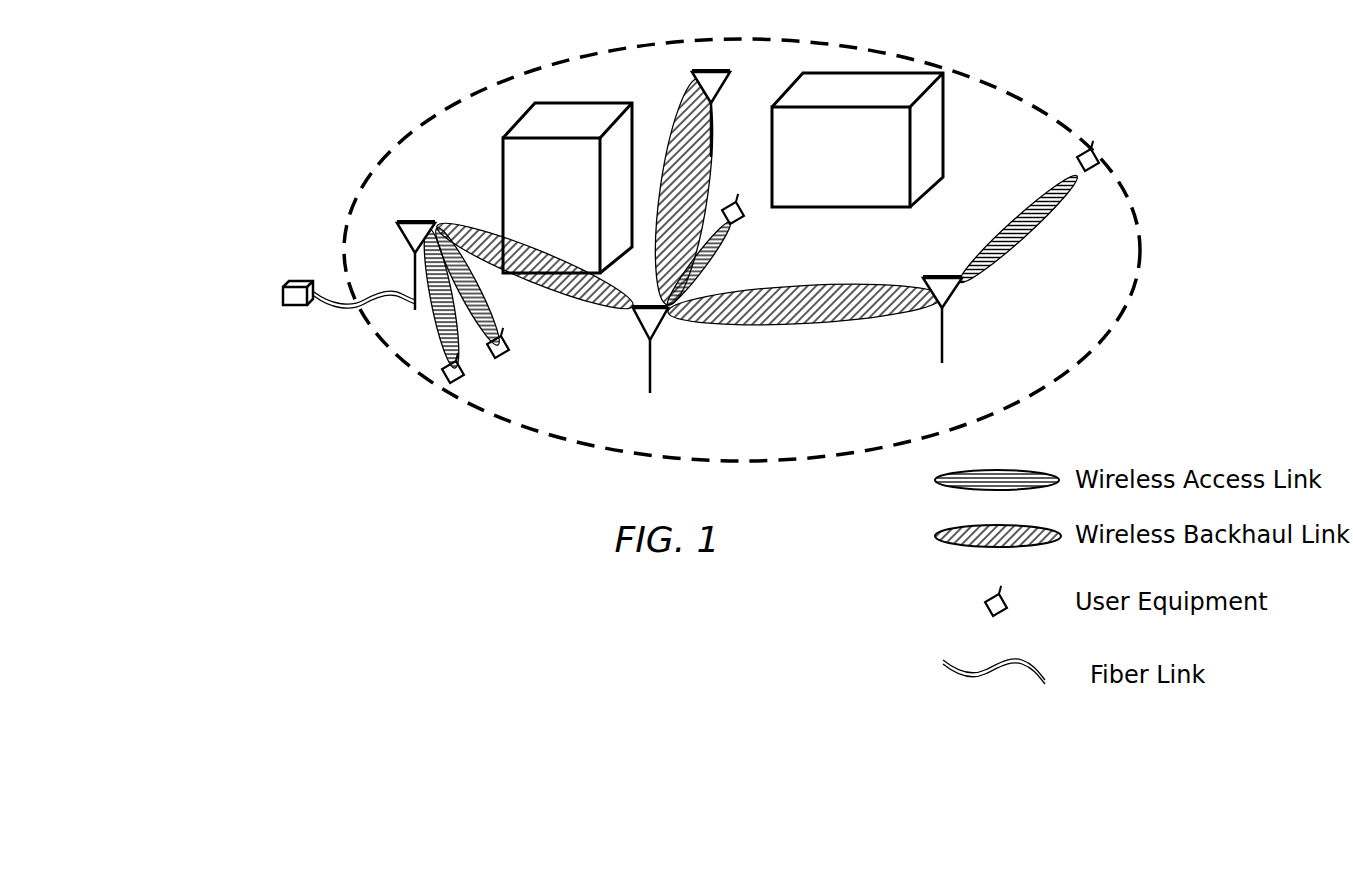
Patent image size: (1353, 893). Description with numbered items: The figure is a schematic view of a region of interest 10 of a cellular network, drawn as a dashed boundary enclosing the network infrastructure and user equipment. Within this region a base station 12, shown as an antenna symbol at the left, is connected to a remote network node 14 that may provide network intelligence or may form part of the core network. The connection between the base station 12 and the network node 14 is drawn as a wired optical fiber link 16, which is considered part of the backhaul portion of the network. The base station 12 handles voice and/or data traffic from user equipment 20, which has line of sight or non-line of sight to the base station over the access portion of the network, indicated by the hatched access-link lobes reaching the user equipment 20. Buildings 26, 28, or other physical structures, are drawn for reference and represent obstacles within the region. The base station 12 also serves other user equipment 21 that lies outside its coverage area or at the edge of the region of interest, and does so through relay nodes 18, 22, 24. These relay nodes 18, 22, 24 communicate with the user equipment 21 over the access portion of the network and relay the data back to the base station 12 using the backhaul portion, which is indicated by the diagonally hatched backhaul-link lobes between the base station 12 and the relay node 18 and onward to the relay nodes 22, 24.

The region of interest 10 is at (446, 111).
The base station 12 is at (410, 243).
The remote network node 14 is at (282, 292).
The optical fiber link 16 is at (358, 296).
The relay node 18 is at (647, 337).
The user equipment 20 is at (503, 360).
The user equipment 21 is at (727, 201).
The relay node 22 is at (717, 71).
The relay node 24 is at (940, 277).
The building 26 is at (514, 168).
The building 28 is at (937, 122).